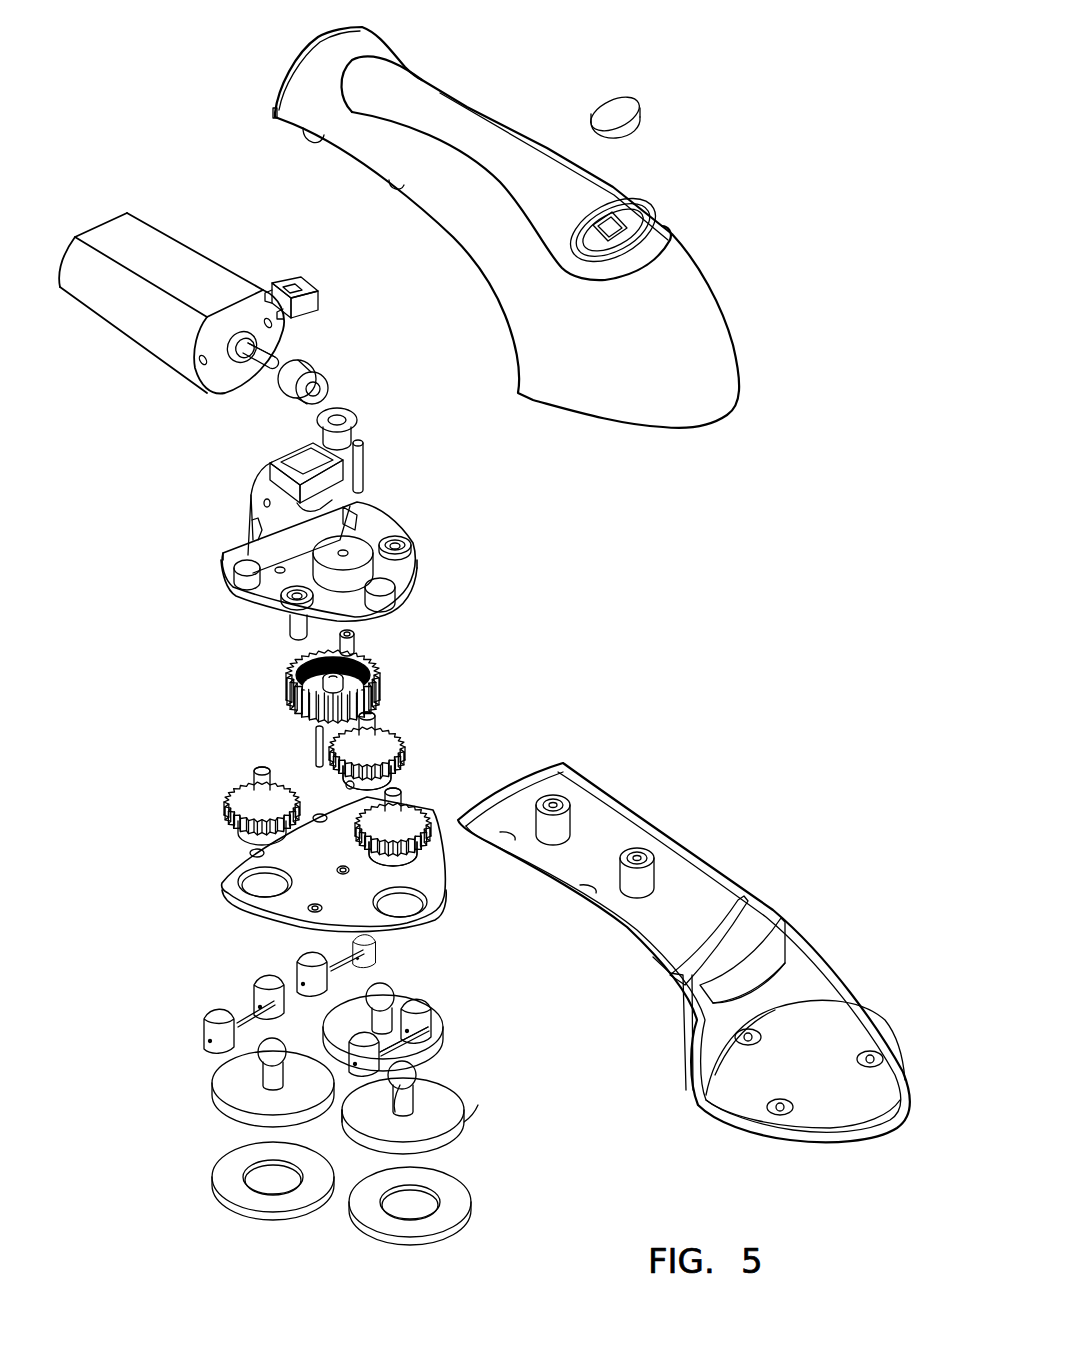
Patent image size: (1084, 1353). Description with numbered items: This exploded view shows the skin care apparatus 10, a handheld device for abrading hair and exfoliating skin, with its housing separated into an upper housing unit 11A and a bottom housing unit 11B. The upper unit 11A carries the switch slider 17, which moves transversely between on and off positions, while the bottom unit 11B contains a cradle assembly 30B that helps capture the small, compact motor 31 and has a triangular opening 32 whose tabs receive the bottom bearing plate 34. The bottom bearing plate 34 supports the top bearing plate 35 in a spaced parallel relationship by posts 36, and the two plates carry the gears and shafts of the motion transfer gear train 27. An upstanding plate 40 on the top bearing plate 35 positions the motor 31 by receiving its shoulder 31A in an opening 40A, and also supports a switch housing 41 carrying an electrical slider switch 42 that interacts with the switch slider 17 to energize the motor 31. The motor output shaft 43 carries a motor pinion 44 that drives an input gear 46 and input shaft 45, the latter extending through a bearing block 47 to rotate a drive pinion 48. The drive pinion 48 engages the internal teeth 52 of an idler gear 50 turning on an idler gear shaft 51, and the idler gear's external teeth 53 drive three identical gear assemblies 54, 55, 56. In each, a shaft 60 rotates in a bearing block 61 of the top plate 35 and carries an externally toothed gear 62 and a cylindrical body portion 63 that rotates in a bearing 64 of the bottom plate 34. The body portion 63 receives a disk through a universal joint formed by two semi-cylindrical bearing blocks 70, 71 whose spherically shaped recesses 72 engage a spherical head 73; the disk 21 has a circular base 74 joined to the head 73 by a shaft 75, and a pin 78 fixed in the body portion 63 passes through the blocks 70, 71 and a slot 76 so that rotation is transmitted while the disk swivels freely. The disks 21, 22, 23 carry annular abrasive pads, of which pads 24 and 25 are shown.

The skin care apparatus 10 is at (745, 573).
The upper housing unit 11A is at (706, 294).
The bottom housing unit 11B is at (657, 827).
The switch slider 17 is at (622, 102).
The disk 21 is at (425, 1116).
The disk 22 is at (226, 1078).
The disk 23 is at (381, 1014).
The annular pad 24 is at (460, 1200).
The annular pad 25 is at (218, 1172).
The motion transfer gear train 27 is at (116, 420).
The cradle assembly 30B is at (757, 900).
The motor 31 is at (168, 246).
The shoulder 31A is at (205, 396).
The opening 32 is at (853, 1023).
The bottom bearing plate 34 is at (282, 907).
The top bearing plate 35 is at (377, 512).
The post 36 is at (290, 630).
The upstanding plate 40 is at (250, 515).
The opening 40A is at (252, 522).
The switch housing 41 is at (275, 466).
The electrical slider switch 42 is at (312, 297).
The output shaft 43 is at (273, 349).
The motor pinion 44 is at (327, 386).
The input shaft 45 is at (363, 478).
The input gear 46 is at (350, 416).
The bearing block 47 is at (363, 547).
The drive pinion 48 is at (358, 635).
The idler gear 50 is at (342, 686).
The idler gear shaft 51 is at (316, 742).
The internal teeth 52 is at (300, 657).
The external teeth 53 is at (380, 685).
The gear assembly 54 is at (436, 806).
The gear assembly 55 is at (213, 832).
The gear assembly 56 is at (420, 741).
The shaft 60 is at (393, 795).
The bearing block 61 is at (390, 583).
The externally toothed gear 62 is at (405, 857).
The cylindrical body portion 63 is at (362, 780).
The bearing 64 is at (403, 910).
The semi-cylindrical bearing block 70 is at (417, 1053).
The semi-cylindrical bearing block 71 is at (423, 1013).
The partially spherically shaped recess 72 is at (440, 1027).
The spherical head 73 is at (410, 1078).
The circular base 74 is at (467, 1122).
The shaft 75 is at (410, 1095).
The slot 76 is at (410, 1082).
The pin 78 is at (440, 1057).